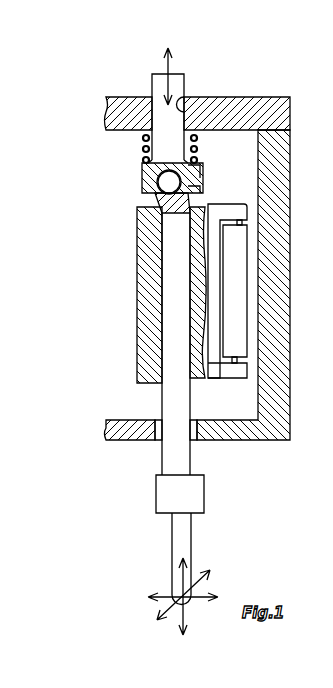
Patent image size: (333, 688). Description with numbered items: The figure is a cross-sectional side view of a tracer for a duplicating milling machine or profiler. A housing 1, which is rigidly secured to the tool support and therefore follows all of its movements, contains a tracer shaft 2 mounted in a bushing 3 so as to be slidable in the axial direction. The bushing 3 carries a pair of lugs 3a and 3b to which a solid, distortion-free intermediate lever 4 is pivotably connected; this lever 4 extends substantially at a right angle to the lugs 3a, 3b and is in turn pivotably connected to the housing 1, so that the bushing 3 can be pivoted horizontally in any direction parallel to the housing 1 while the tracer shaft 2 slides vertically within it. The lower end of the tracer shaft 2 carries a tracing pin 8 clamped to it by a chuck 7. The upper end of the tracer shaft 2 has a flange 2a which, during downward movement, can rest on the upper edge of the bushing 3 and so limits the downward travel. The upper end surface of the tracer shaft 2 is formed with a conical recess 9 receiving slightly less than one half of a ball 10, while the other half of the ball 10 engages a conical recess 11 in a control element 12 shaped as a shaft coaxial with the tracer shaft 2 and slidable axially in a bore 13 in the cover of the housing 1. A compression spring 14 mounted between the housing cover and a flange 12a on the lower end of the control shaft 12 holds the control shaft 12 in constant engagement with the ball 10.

The housing 1 is at (272, 352).
The tracer shaft 2 is at (172, 402).
The flange 2a is at (158, 196).
The bushing 3 is at (137, 322).
The lug 3a is at (232, 378).
The lug 3b is at (234, 214).
The intermediate lever 4 is at (245, 311).
The chuck 7 is at (168, 497).
The tracing pin 8 is at (178, 550).
The conical recess 9 is at (197, 188).
The ball 10 is at (169, 182).
The conical recess 11 is at (194, 170).
The control element 12 is at (151, 85).
The flange 12a is at (142, 167).
The bore 13 is at (186, 96).
The compression spring 14 is at (143, 140).